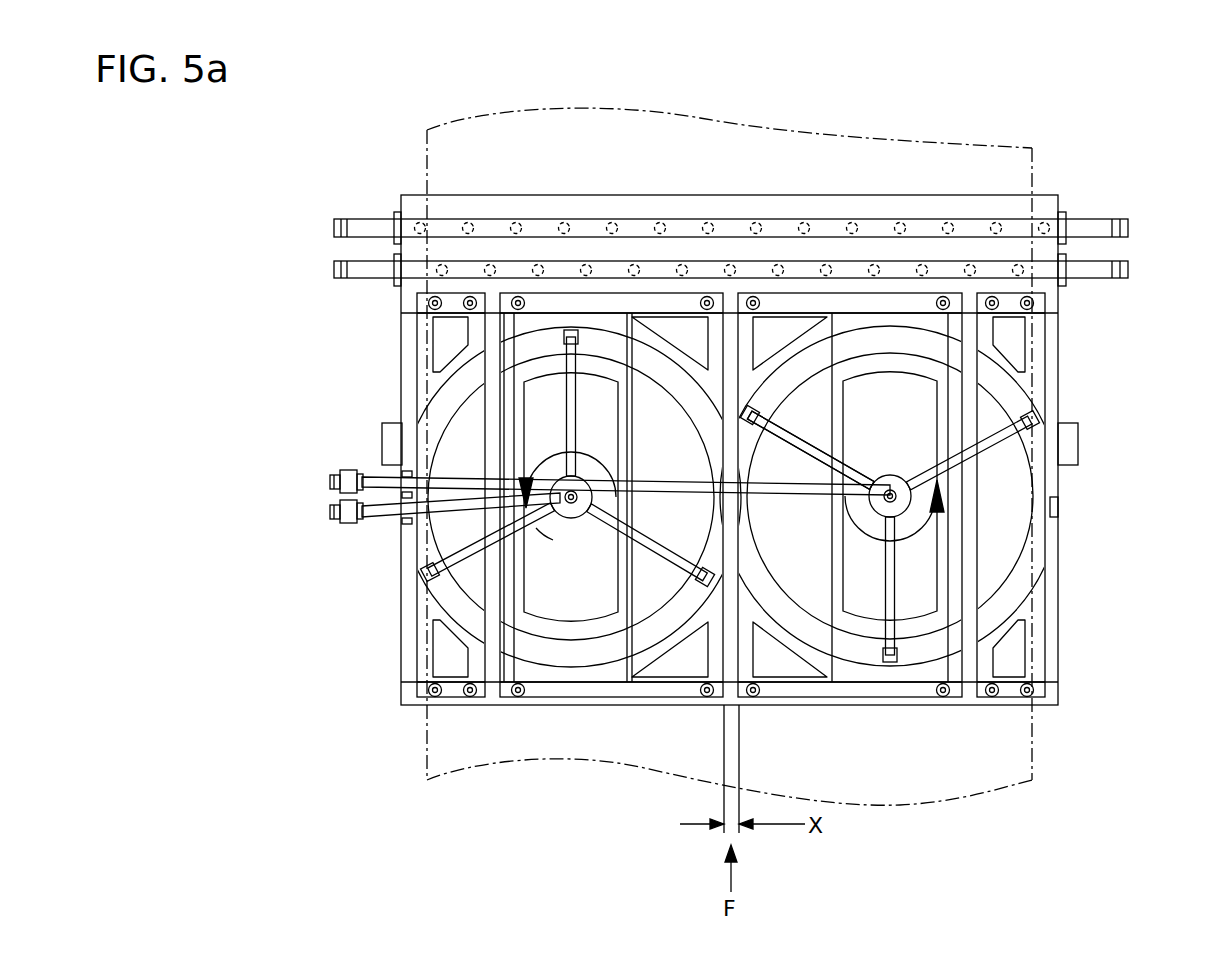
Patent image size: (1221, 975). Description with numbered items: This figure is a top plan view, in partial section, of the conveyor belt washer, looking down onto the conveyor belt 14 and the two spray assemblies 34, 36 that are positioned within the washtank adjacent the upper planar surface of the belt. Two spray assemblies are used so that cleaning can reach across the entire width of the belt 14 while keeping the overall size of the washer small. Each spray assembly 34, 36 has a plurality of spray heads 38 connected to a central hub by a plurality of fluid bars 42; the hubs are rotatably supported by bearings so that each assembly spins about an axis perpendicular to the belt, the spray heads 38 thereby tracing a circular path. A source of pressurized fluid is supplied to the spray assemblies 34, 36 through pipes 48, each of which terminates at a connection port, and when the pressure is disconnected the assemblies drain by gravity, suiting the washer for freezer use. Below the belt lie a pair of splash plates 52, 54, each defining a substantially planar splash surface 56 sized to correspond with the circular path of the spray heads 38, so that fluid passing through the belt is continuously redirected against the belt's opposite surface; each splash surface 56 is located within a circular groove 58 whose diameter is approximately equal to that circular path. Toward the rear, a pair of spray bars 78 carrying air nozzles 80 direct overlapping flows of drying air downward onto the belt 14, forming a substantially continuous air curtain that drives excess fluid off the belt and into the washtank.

The conveyor belt 14 is at (1035, 745).
The spray assembly 34 is at (574, 538).
The spray assembly 36 is at (914, 570).
The spray heads 38 is at (576, 330).
The fluid bars 42 is at (868, 430).
The pipes 48 is at (372, 505).
The splash plate 52 is at (458, 305).
The splash plate 54 is at (917, 303).
The splash surface 56 is at (550, 340).
The circular groove 58 is at (597, 347).
The spray bars 78 is at (1103, 264).
The air nozzles 80 is at (996, 214).